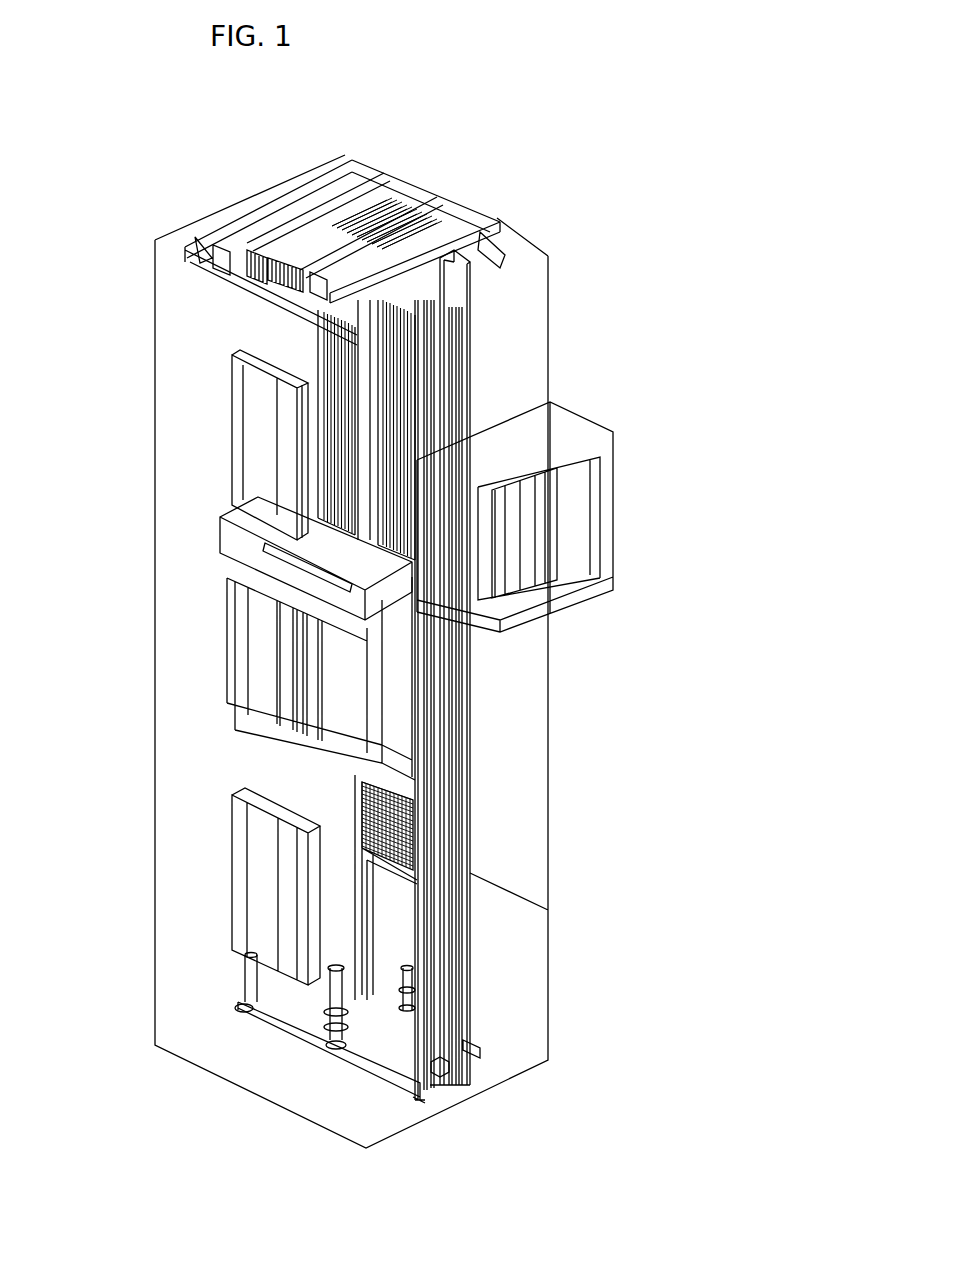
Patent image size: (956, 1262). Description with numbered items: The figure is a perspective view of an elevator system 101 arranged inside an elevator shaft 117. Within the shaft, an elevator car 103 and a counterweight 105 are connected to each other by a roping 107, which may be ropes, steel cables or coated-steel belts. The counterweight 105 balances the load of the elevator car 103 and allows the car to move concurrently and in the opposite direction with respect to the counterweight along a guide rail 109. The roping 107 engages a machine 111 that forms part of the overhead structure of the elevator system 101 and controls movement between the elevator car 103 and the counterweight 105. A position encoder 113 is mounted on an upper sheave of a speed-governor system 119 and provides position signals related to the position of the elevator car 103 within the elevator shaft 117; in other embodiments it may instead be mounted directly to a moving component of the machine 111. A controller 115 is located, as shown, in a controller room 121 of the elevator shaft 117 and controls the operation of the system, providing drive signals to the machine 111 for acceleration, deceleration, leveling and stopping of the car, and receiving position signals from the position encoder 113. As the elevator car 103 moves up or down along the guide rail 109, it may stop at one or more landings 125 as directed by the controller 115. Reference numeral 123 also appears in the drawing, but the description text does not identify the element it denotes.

The elevator system 101 is at (603, 186).
The elevator car 103 is at (343, 690).
The counterweight 105 is at (415, 843).
The roping 107 is at (358, 436).
The guide rail 109 is at (437, 725).
The machine 111 is at (288, 235).
The position encoder 113 is at (467, 293).
The controller 115 is at (552, 530).
The elevator shaft 117 is at (203, 752).
The speed-governor system 119 is at (458, 338).
The controller room 121 is at (614, 428).
The base 123 is at (494, 1003).
The landings 125 is at (232, 425).